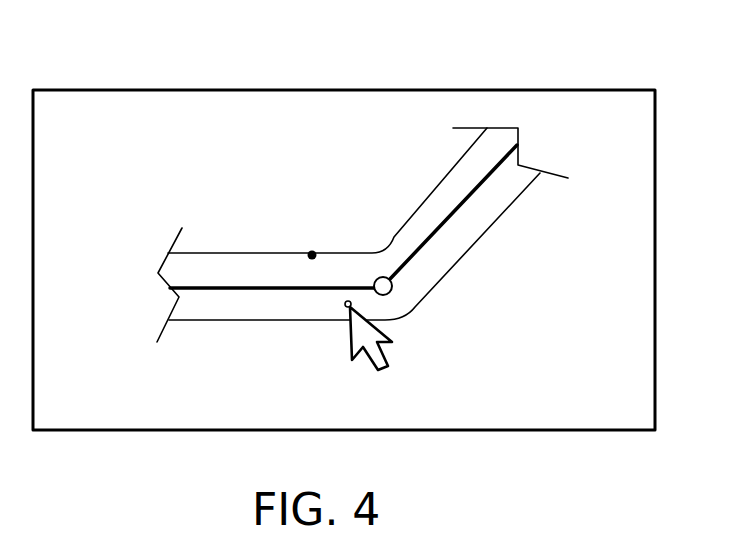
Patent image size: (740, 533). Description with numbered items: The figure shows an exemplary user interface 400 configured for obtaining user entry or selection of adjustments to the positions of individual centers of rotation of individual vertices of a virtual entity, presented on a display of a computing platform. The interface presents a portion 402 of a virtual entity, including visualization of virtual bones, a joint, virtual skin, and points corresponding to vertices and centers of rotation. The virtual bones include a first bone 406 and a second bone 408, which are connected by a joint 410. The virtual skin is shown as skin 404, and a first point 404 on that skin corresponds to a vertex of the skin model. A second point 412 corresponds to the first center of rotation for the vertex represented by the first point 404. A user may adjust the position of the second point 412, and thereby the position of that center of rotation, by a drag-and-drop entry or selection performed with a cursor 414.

The user interface 400 is at (467, 76).
The graphical object 402 is at (163, 204).
The skin 404 is at (200, 251).
The first bone 406 is at (247, 290).
The second bone 408 is at (470, 198).
The joint 410 is at (393, 288).
The second point 412 is at (345, 308).
The cursor 414 is at (388, 367).